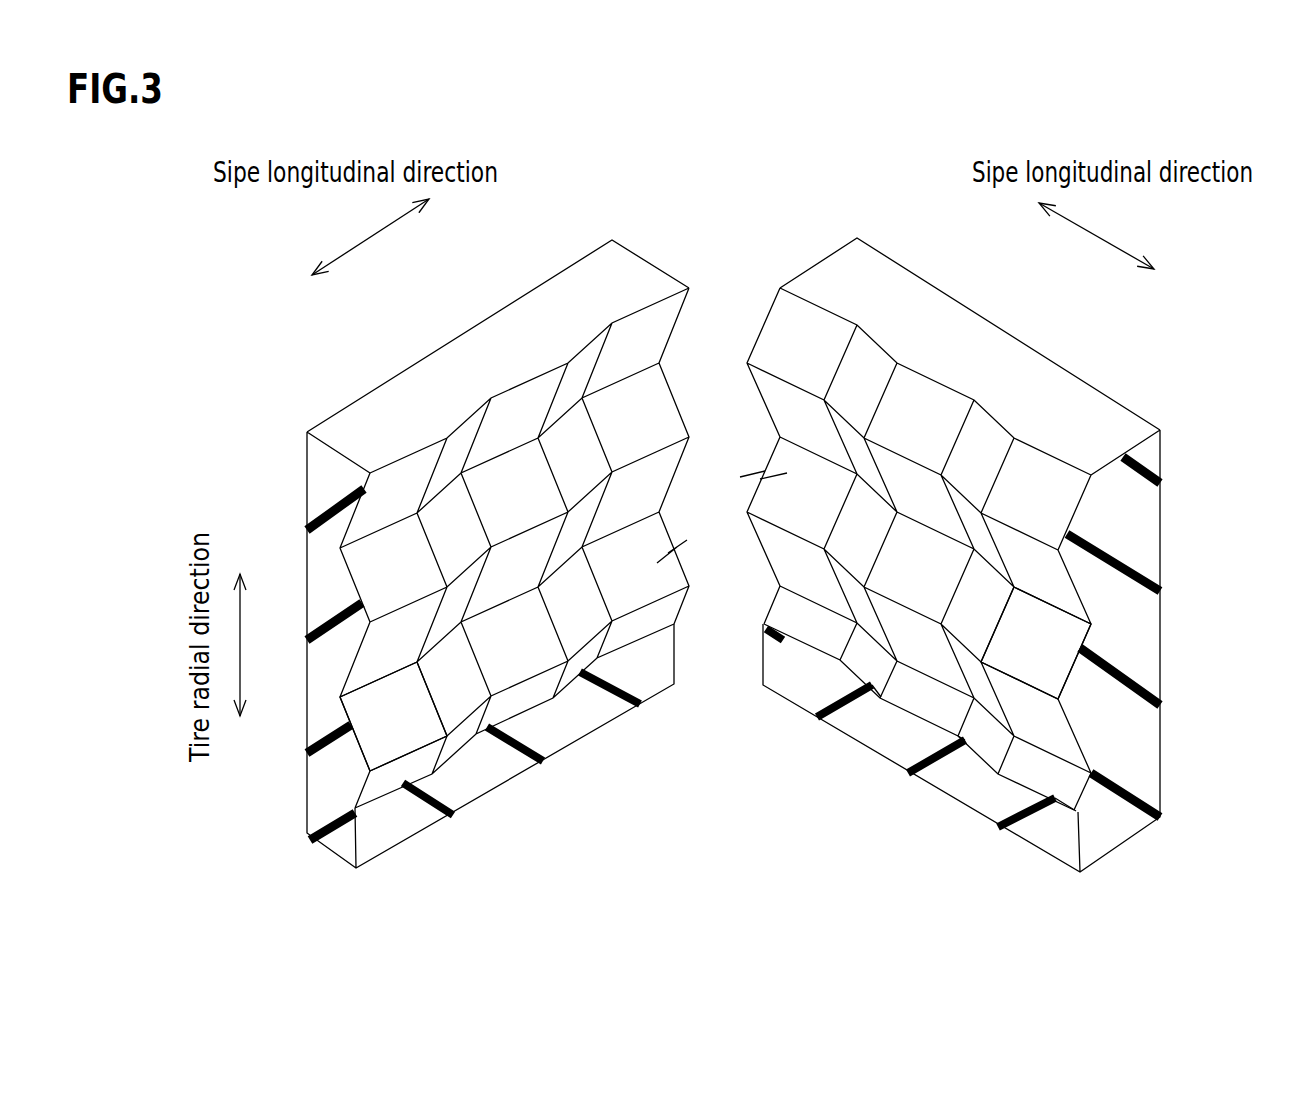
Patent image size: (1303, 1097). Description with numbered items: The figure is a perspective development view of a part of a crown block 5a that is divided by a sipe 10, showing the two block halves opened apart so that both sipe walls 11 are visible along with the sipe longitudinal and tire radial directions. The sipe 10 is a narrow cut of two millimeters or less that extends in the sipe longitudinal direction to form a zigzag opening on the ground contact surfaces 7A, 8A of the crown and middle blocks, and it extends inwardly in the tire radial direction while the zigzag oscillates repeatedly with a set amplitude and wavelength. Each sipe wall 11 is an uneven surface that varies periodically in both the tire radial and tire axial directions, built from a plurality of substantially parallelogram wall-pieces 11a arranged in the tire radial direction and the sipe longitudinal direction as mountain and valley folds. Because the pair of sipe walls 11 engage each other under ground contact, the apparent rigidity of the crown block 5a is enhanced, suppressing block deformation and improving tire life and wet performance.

The crown block 5a is at (733, 555).
The ground contact surface of the crown block 7A is at (733, 555).
The ground contact surface of the middle block 8A is at (992, 352).
The sipe 10 is at (715, 608).
The sipe wall 11 is at (577, 608).
The wall-piece 11a is at (405, 720).